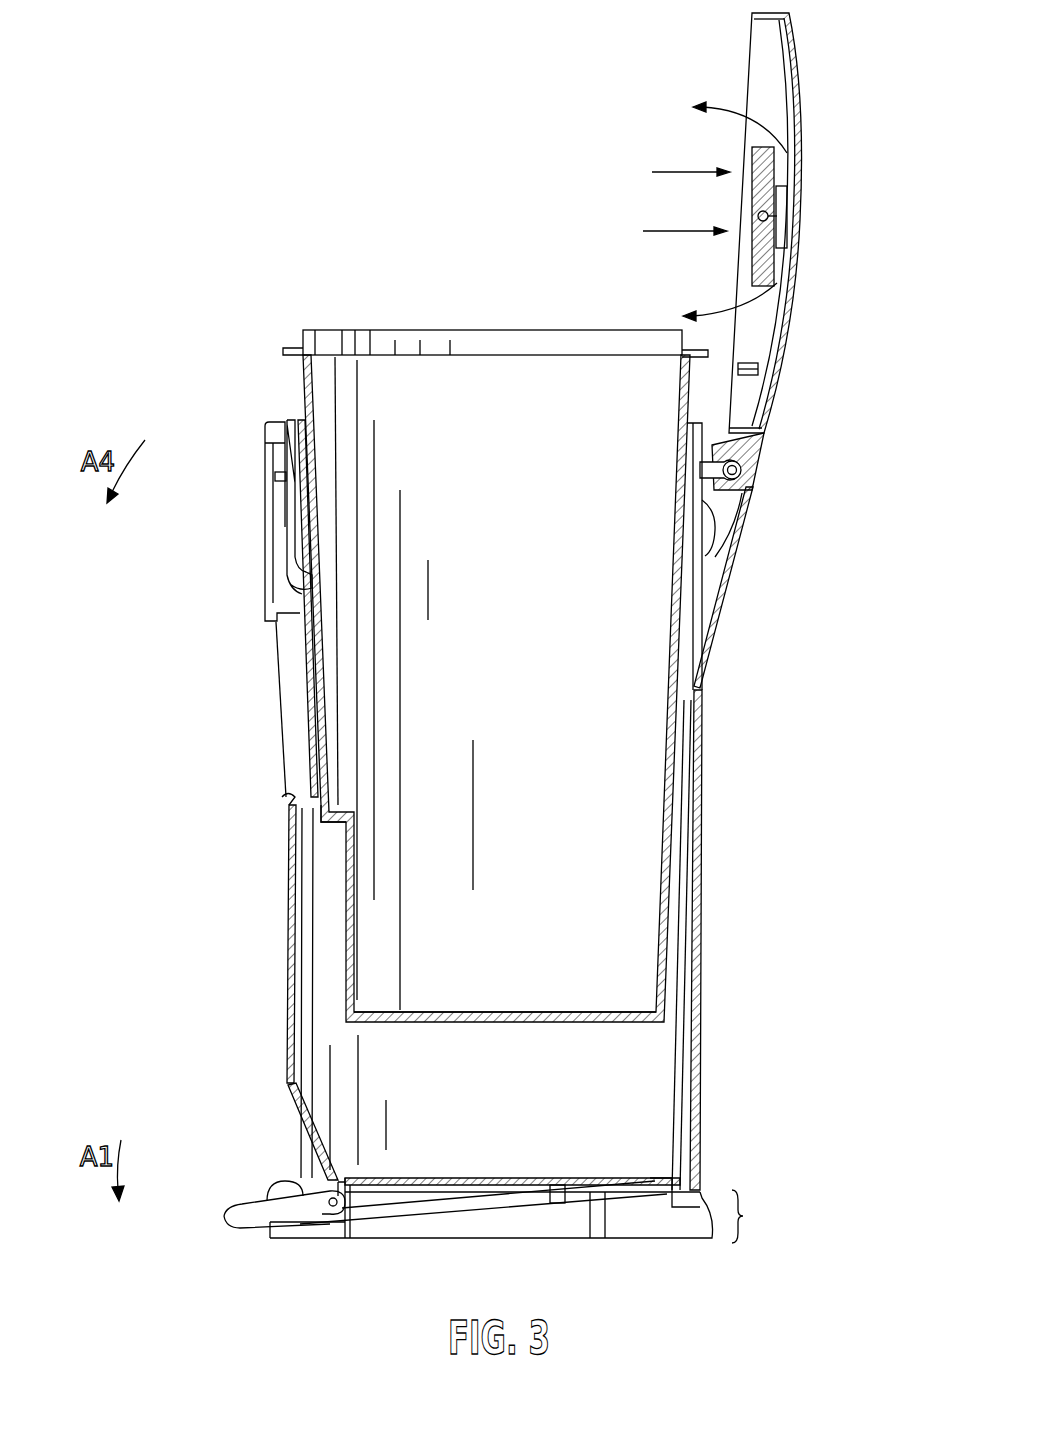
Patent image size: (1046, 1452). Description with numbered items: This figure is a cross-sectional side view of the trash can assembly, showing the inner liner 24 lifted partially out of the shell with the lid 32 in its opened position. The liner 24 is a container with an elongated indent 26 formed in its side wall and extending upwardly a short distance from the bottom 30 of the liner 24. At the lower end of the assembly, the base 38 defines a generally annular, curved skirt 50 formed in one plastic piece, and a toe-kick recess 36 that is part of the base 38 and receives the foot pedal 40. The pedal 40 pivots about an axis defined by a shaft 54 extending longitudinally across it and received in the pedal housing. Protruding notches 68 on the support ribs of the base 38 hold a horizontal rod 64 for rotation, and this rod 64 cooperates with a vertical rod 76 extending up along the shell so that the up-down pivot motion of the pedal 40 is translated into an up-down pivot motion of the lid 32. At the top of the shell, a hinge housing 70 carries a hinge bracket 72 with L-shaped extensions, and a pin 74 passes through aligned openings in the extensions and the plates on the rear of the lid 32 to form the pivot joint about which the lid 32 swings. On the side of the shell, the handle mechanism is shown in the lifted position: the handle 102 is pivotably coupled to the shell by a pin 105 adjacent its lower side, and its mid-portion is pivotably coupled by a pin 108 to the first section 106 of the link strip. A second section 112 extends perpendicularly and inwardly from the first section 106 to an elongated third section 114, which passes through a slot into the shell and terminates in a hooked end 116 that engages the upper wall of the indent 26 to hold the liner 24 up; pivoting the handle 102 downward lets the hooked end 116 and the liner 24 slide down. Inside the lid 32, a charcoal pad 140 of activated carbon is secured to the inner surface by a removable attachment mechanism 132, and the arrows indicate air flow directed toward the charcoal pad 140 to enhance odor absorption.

The inner liner 24 is at (492, 682).
The elongated indent 26 is at (350, 915).
The bottom 30 is at (498, 1034).
The lid 32 is at (782, 376).
The toe-kick recess 36 is at (320, 1130).
The base 38 is at (758, 1216).
The foot pedal 40 is at (228, 1213).
The skirt 50 is at (702, 1200).
The shaft 54 is at (345, 1178).
The horizontal rod 64 is at (400, 1218).
The protruding notches 68 is at (558, 1190).
The hinge housing 70 is at (742, 522).
The hinge bracket 72 is at (706, 540).
The pin 74 is at (757, 467).
The vertical rod 76 is at (678, 1118).
The handle 102 is at (265, 432).
The pin 105 is at (270, 583).
The first section 106 is at (275, 553).
The pin 108 is at (278, 525).
The second section 112 is at (275, 632).
The third section 114 is at (292, 660).
The hooked end 116 is at (340, 806).
The removable attachment mechanism 132 is at (794, 214).
The charcoal pad 140 is at (777, 166).